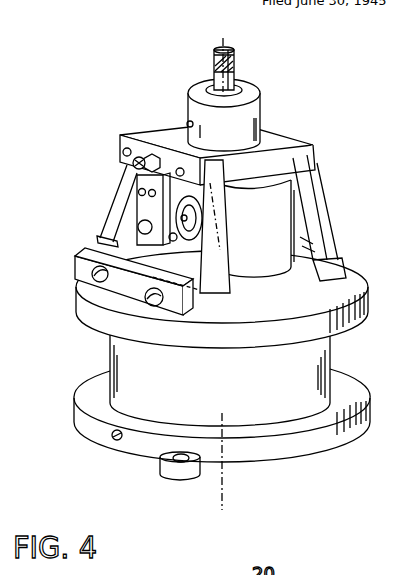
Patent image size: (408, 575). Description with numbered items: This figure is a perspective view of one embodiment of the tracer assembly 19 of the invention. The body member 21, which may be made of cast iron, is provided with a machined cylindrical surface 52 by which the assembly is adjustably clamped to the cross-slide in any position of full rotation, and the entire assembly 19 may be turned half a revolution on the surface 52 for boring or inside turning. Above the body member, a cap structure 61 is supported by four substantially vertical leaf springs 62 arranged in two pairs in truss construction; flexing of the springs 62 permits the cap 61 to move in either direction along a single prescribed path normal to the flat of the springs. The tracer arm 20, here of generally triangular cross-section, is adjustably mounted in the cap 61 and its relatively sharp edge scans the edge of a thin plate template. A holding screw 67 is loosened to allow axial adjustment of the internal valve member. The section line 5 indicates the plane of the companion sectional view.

The section line 5- 5 is at (222, 40).
The assembly 19 is at (88, 226).
The tracer arm 20 is at (235, 62).
The body member 21 is at (75, 398).
The machined cylindrical surface 52 is at (110, 353).
The cap structure 61 is at (260, 112).
The leaf springs 62 is at (127, 198).
The holding screw 67 is at (177, 241).